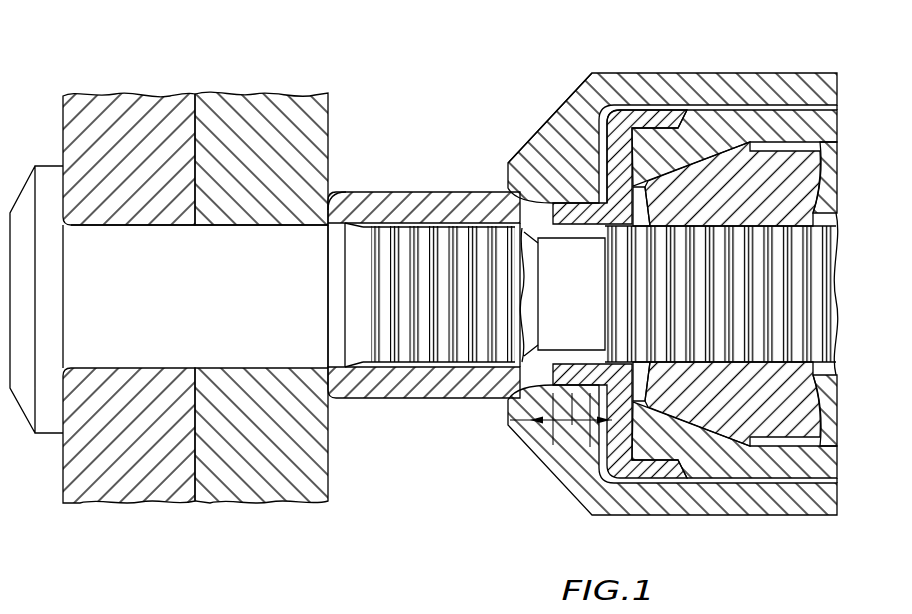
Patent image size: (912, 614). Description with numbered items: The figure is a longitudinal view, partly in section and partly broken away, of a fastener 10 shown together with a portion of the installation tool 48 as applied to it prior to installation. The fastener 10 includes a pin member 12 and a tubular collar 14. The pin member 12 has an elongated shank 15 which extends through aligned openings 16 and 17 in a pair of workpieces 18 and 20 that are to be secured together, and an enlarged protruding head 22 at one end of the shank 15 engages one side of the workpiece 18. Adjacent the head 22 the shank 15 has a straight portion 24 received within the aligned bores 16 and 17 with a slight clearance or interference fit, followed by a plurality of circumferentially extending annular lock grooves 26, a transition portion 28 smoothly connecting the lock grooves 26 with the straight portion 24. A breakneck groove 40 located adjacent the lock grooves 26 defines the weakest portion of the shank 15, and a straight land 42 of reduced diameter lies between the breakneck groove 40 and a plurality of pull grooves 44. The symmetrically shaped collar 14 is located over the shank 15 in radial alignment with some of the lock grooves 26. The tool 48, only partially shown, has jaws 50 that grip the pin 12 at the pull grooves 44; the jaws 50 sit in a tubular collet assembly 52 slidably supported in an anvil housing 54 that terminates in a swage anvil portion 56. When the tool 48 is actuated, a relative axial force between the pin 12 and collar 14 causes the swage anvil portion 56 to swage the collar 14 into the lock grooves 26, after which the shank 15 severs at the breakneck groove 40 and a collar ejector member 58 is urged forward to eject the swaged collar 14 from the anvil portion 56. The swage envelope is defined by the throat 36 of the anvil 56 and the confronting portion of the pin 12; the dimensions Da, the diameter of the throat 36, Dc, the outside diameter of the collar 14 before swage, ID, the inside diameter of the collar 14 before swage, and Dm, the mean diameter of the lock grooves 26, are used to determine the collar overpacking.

The fastener 10 is at (390, 190).
The pin member 12 is at (196, 278).
The tubular collar 14 is at (424, 249).
The shank 15 is at (857, 495).
The opening 16 is at (112, 234).
The opening 17 is at (250, 234).
The workpiece 18 is at (165, 112).
The workpiece 20 is at (298, 103).
The head 22 is at (43, 170).
The straight portion 24 is at (200, 309).
The lock grooves 26 is at (497, 228).
The transition portion 28 is at (360, 194).
The throat 36 is at (572, 447).
The breakneck groove 40 is at (528, 242).
The land 42 is at (562, 291).
The pull grooves 44 is at (719, 222).
The tool 48 is at (563, 86).
The jaws 50 is at (770, 167).
The collet assembly 52 is at (721, 108).
The anvil housing 54 is at (628, 98).
The swage anvil portion 56 is at (545, 140).
The collar ejector member 58 is at (618, 125).
The outside diameter of the collar Dc is at (393, 399).
The mean diameter of the lock grooves Dm is at (477, 183).
The inside diameter of the collar ID is at (418, 362).
The diameter of the throat Da is at (578, 208).